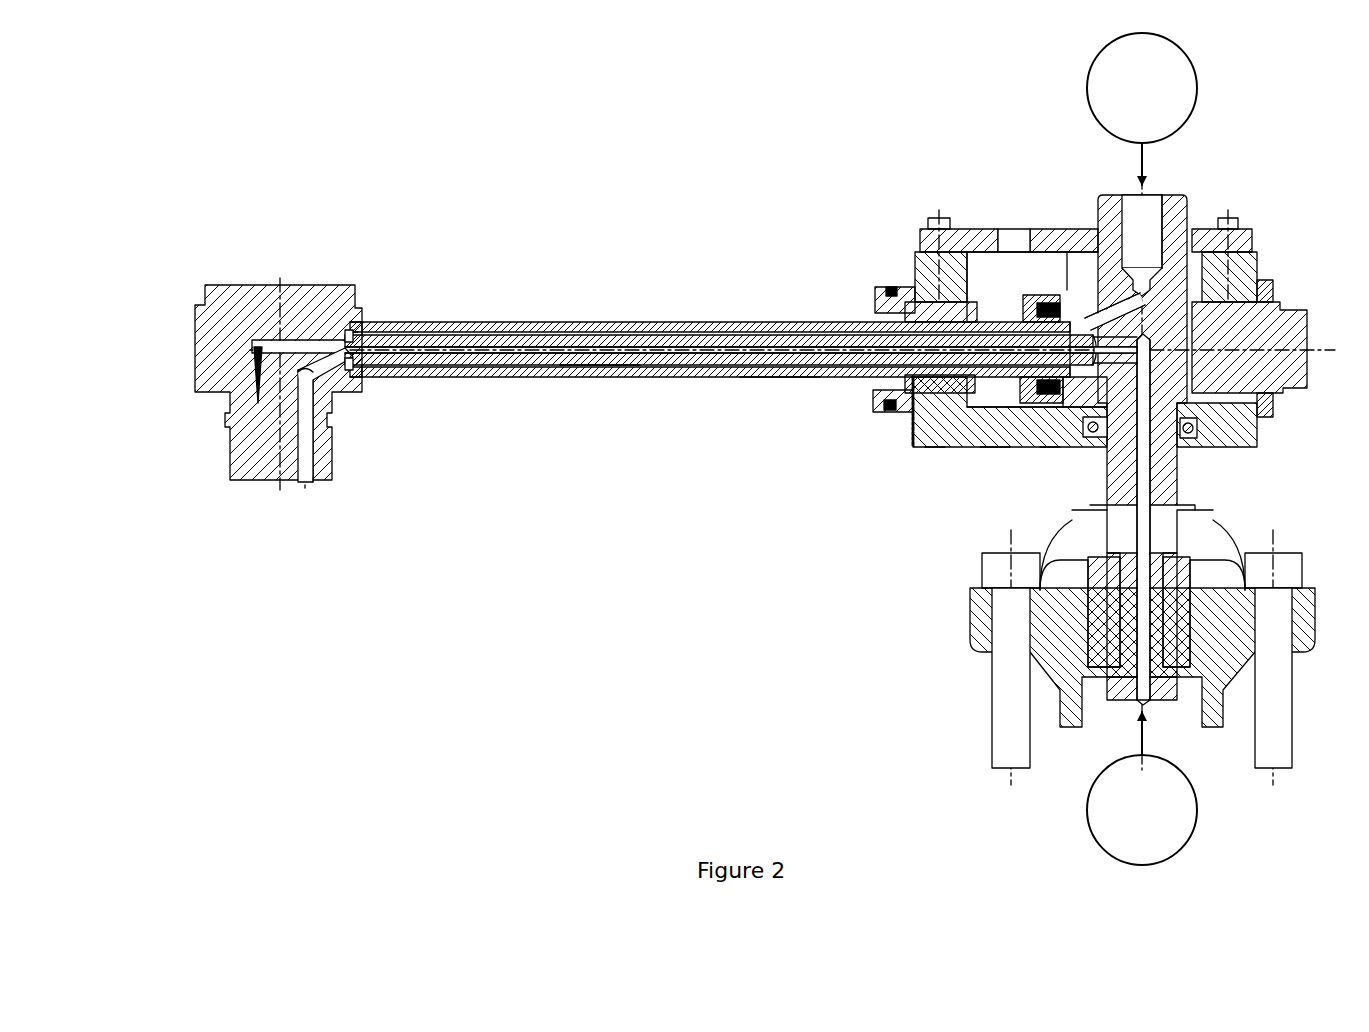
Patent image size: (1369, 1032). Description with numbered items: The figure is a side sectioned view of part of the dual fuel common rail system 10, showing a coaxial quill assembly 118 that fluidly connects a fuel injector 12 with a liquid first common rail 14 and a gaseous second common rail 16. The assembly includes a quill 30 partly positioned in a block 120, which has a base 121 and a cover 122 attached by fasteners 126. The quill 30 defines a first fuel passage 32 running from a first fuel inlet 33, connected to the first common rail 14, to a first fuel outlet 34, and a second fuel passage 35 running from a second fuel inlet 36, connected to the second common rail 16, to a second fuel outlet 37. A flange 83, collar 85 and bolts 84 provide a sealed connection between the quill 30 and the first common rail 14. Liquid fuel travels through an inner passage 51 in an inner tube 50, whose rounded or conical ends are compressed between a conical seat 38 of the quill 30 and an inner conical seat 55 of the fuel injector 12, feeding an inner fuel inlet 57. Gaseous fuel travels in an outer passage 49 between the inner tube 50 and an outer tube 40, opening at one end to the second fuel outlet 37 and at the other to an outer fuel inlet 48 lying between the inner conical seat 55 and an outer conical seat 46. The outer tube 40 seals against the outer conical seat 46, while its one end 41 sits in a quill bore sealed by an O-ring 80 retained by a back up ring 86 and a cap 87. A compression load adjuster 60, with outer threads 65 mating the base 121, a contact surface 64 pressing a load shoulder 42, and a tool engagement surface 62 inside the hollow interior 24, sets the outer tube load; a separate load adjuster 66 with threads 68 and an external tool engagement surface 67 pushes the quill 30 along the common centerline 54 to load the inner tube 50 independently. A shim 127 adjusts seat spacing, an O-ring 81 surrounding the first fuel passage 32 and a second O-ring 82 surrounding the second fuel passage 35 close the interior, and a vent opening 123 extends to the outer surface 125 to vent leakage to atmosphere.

The dual fuel common rail system 10 is at (508, 632).
The fuel injector 12 is at (332, 440).
The first common rail 14 is at (1087, 810).
The second common rail 16 is at (1087, 90).
The hollow interior 24 is at (1009, 297).
The quill 30 is at (1177, 470).
The first fuel passage 32 is at (1150, 470).
The first fuel inlet 33 is at (1137, 700).
The first fuel outlet 34 is at (1093, 388).
The second fuel passage 35 is at (1122, 250).
The second fuel inlet 36 is at (1150, 195).
The second fuel outlet 37 is at (1093, 334).
The conical seat 38 is at (1055, 378).
The outer tube 40 is at (722, 322).
The one end 41 is at (1112, 312).
The load shoulder 42 is at (903, 287).
The outer conical seat 46 is at (358, 326).
The outer fuel inlet 48 is at (335, 392).
The outer passage 49 is at (658, 365).
The inner tube 50 is at (597, 365).
The inner passage 51 is at (530, 335).
The common centerline 54 is at (780, 377).
The inner conical seat 55 is at (360, 375).
The inner fuel inlet 57 is at (348, 342).
The compression load adjuster 60 is at (895, 412).
The tool engagement surface 62 is at (975, 390).
The contact surface 64 is at (875, 385).
The outer threads 65 is at (962, 447).
The load adjuster 66 is at (1285, 412).
The tool engagement surface 67 is at (1300, 302).
The threads 68 is at (1257, 440).
The O-ring 80 is at (1045, 295).
The O-ring 81 is at (1100, 440).
The second O-ring 82 is at (1185, 240).
The flange 83 is at (970, 600).
The bolts 84 is at (992, 694).
The collar 85 is at (1170, 672).
The back up ring 86 is at (1040, 407).
The cap 87 is at (1025, 295).
The coaxial quill assembly 118 is at (930, 455).
The block 120 is at (1050, 455).
The base 121 is at (992, 452).
The cover 122 is at (972, 229).
The vent opening 123 is at (1018, 240).
The outer surface 125 is at (1048, 229).
The fasteners 126 is at (939, 218).
The shim 127 is at (913, 447).